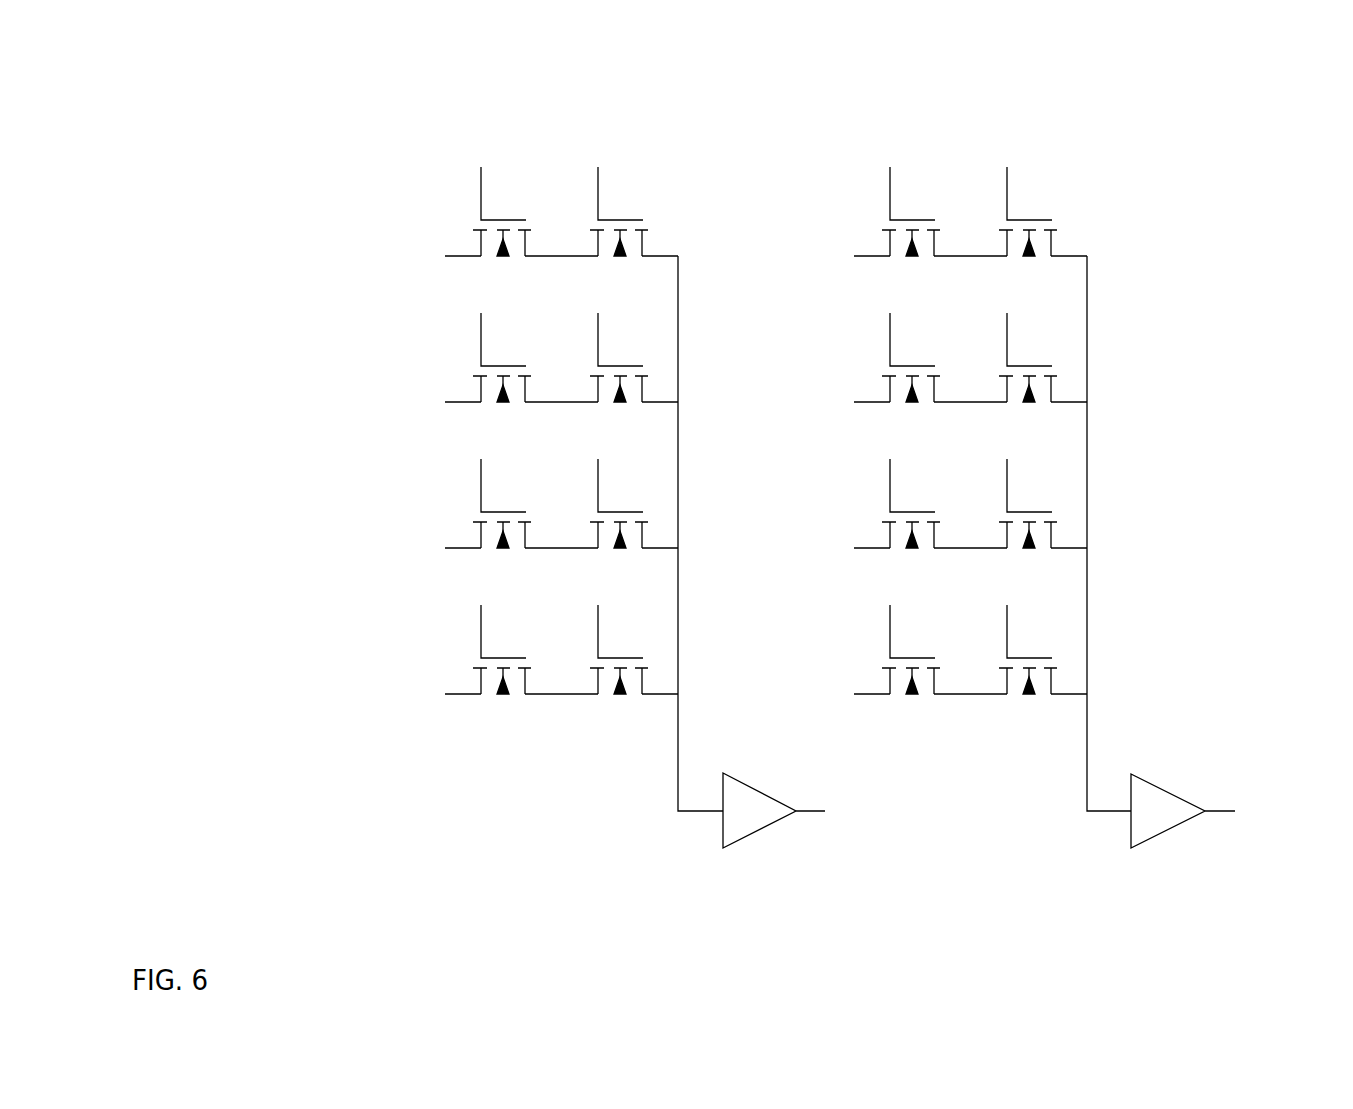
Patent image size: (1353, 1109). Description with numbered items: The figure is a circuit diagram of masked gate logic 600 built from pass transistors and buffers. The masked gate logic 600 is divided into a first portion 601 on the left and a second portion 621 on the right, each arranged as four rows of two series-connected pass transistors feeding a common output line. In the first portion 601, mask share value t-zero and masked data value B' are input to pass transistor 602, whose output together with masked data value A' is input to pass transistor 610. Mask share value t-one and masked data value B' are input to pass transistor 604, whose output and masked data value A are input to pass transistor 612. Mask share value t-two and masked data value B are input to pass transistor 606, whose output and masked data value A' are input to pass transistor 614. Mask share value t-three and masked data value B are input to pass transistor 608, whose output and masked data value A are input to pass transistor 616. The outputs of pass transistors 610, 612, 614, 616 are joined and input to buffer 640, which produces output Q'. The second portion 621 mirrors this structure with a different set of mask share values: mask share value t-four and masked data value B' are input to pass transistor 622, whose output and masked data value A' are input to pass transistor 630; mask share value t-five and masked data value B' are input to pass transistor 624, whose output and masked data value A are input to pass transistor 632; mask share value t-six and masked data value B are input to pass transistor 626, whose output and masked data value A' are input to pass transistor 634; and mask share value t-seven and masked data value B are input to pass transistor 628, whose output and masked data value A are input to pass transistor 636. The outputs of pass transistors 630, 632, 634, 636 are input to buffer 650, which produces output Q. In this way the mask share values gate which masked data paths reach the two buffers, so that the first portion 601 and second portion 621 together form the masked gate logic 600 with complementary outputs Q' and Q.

The masked gate logic 600 is at (298, 112).
The first portion 601 is at (525, 105).
The second portion 621 is at (940, 108).
The pass transistor 602 is at (468, 237).
The pass transistor 604 is at (468, 383).
The pass transistor 606 is at (468, 529).
The pass transistor 608 is at (468, 675).
The pass transistor 610 is at (652, 232).
The pass transistor 612 is at (650, 385).
The pass transistor 614 is at (650, 531).
The pass transistor 616 is at (650, 677).
The pass transistor 622 is at (878, 238).
The pass transistor 624 is at (878, 384).
The pass transistor 626 is at (878, 530).
The pass transistor 628 is at (878, 676).
The pass transistor 630 is at (1060, 243).
The pass transistor 632 is at (1060, 389).
The pass transistor 634 is at (1060, 535).
The pass transistor 636 is at (1060, 681).
The buffer 640 is at (770, 795).
The buffer 650 is at (1165, 787).